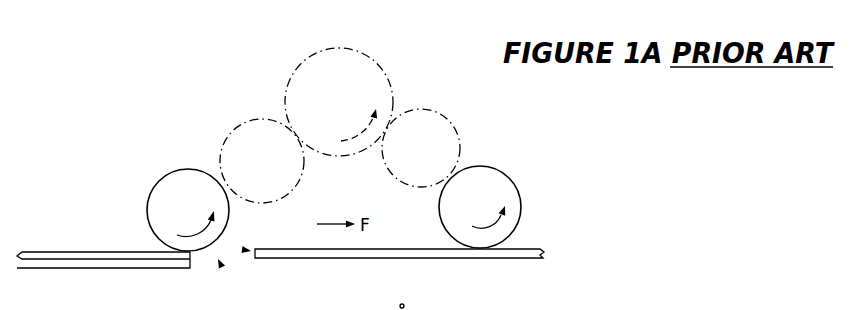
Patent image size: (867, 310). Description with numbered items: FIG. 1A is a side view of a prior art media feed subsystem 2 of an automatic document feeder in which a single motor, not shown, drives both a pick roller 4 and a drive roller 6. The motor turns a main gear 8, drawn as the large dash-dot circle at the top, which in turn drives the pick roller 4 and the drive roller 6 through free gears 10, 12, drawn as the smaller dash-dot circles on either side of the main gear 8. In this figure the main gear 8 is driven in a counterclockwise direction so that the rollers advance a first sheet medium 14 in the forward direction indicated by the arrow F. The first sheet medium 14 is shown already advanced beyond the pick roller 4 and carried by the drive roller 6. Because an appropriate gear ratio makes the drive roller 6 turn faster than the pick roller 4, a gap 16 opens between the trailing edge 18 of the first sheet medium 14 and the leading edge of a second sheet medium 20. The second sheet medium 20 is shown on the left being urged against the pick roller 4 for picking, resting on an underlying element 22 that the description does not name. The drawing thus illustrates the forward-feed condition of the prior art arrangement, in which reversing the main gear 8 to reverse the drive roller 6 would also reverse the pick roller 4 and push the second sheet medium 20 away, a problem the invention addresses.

The media feed subsystem 2 is at (207, 43).
The pick roller 4 is at (171, 186).
The drive roller 6 is at (502, 189).
The main gear 8 is at (345, 63).
The free gear 10 is at (233, 137).
The free gear 12 is at (457, 128).
The first sheet medium 14 is at (412, 253).
The gap 16 is at (222, 267).
The trailing edge 18 is at (242, 250).
The second sheet medium 20 is at (95, 253).
The lower guide plate 22 is at (115, 265).